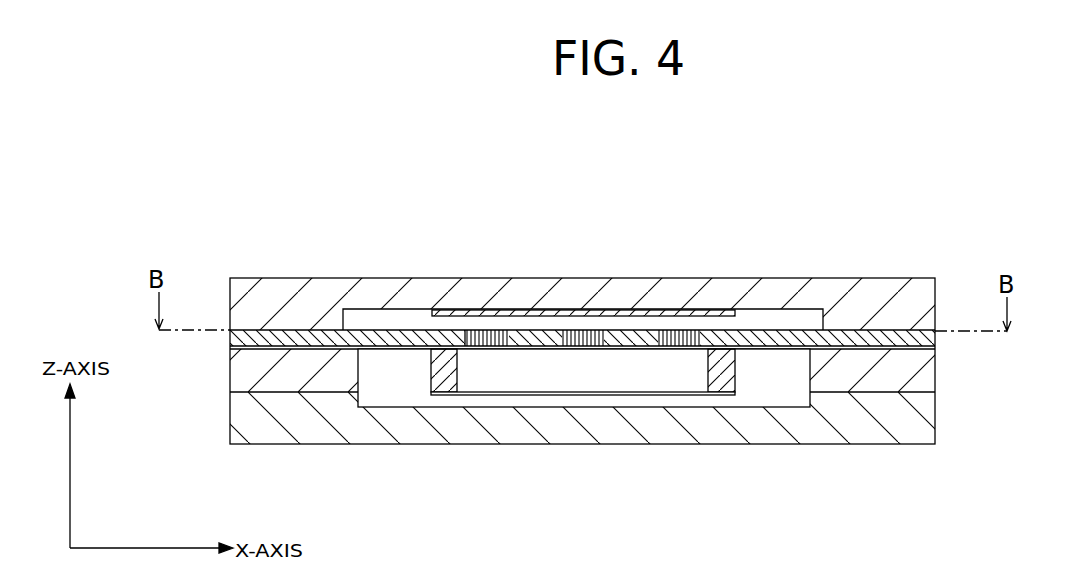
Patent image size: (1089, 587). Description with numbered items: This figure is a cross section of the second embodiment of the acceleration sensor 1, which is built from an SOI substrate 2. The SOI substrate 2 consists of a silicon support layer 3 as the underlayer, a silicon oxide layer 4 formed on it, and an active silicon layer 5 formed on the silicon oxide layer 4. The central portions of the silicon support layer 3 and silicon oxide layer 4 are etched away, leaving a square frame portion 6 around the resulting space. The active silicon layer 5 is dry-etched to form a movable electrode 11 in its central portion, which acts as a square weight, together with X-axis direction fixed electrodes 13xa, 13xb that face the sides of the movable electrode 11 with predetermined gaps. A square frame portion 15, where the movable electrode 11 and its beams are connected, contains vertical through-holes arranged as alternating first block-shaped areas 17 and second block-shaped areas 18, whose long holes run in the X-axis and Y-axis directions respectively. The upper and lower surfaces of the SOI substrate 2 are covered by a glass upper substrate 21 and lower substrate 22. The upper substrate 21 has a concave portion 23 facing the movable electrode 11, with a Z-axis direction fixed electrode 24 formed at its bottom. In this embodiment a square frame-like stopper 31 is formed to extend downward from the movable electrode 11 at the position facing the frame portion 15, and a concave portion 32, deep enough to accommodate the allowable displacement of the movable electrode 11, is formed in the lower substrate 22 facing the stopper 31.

The acceleration sensor 1 is at (889, 219).
The SOI substrate 2 is at (651, 360).
The silicon support layer 3 is at (932, 375).
The silicon oxide layer 4 is at (932, 351).
The active silicon layer 5 is at (932, 340).
The frame portion 6 is at (255, 369).
The movable electrode 11 is at (630, 330).
The X-axis direction fixed electrode 13xa is at (375, 329).
The X-axis direction fixed electrode 13xb is at (782, 333).
The frame portion 15 is at (457, 333).
The first block-shaped area 17 is at (544, 361).
The second block-shaped area 18 is at (494, 361).
The upper substrate 21 is at (692, 295).
The lower substrate 22 is at (828, 430).
The concave portion 23 is at (415, 322).
The Z-axis direction fixed electrode 24 is at (530, 311).
The stopper 31 is at (730, 368).
The concave portion 32 is at (450, 399).